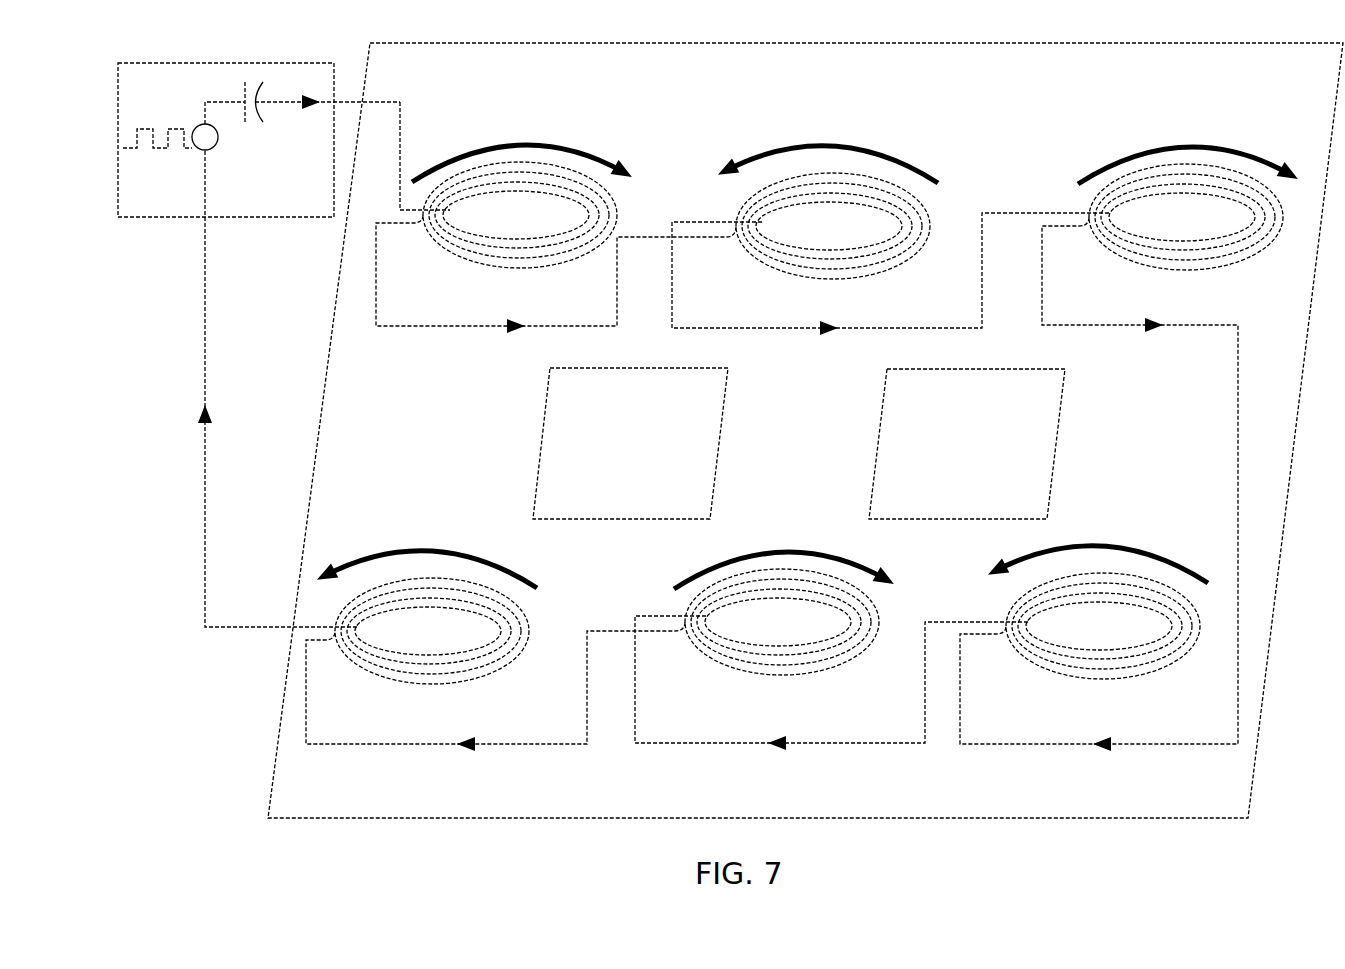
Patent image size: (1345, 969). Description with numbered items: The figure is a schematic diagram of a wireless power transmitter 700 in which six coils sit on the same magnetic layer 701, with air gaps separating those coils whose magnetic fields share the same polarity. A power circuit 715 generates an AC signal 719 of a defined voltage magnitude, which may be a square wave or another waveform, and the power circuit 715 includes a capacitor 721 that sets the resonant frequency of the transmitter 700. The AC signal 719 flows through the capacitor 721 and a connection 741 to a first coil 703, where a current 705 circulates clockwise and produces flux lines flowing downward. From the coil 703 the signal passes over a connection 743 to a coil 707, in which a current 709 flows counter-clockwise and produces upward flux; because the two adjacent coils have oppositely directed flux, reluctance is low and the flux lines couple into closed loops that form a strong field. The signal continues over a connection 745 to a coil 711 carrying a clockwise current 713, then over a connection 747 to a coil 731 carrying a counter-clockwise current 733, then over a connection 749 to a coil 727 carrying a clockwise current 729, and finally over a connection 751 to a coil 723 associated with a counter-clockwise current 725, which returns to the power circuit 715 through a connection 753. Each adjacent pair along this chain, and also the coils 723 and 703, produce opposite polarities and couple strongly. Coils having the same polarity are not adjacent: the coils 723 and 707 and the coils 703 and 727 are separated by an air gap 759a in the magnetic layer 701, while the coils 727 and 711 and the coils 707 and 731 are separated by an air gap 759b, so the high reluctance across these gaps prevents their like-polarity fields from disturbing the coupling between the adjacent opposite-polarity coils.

The wireless power transmitter 700 is at (229, 675).
The magnetic layer 701 is at (375, 820).
The coil 703 is at (528, 267).
The current 705 is at (508, 140).
The coil 707 is at (860, 279).
The current 709 is at (825, 140).
The coil 711 is at (1200, 269).
The current 713 is at (1180, 143).
The power circuit 715 is at (233, 217).
The AC signal 719 is at (166, 164).
The capacitor 721 is at (259, 126).
The coil 723 is at (458, 683).
The current 725 is at (430, 550).
The coil 727 is at (793, 675).
The current 729 is at (770, 553).
The coil 731 is at (1130, 678).
The current 733 is at (1090, 545).
The connection 741 is at (385, 100).
The connection 743 is at (440, 330).
The connection 745 is at (805, 330).
The connection 747 is at (1210, 328).
The connection 749 is at (893, 745).
The connection 751 is at (420, 745).
The connection 753 is at (205, 347).
The air gap 759a is at (595, 432).
The air gap 759b is at (932, 432).